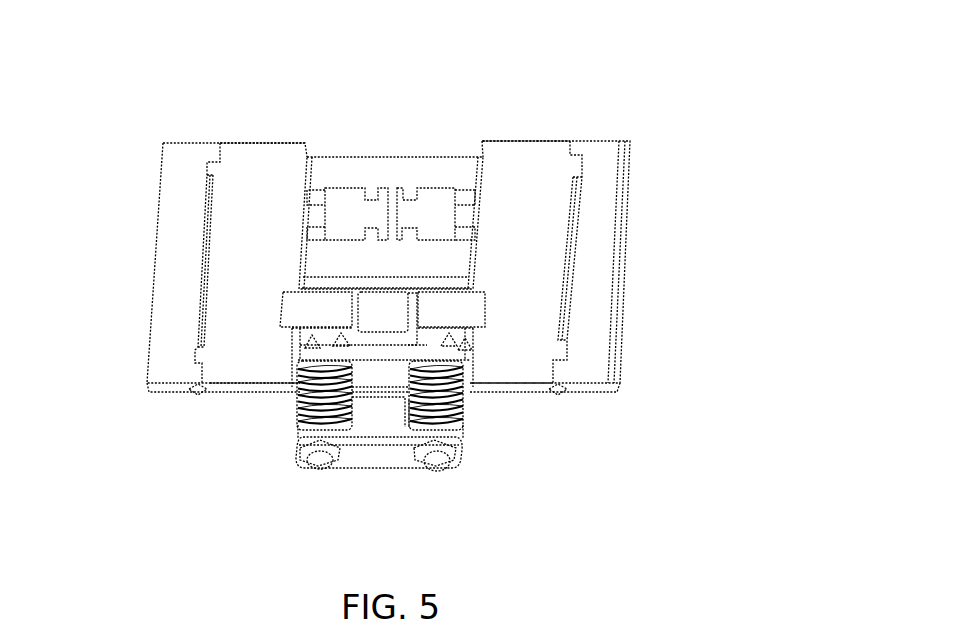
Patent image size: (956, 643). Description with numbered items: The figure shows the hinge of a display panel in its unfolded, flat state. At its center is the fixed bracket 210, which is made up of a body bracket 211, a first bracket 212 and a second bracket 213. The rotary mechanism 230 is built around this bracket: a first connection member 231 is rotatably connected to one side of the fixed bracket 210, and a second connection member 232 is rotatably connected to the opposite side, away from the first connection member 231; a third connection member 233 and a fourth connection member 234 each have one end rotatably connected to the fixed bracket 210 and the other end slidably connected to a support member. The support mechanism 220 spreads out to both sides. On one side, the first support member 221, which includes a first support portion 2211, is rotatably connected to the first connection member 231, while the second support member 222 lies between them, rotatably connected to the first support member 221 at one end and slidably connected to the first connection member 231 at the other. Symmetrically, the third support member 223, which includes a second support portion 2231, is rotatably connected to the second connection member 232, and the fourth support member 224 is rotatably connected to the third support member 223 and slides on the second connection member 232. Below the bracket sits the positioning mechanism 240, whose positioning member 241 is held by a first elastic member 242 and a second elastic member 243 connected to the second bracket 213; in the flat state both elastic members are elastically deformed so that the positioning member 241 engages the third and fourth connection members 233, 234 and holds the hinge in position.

The support mechanism 220 is at (124, 41).
The first support member 221 is at (228, 232).
The first support portion 2211 is at (182, 165).
The second support member 222 is at (258, 168).
The third support member 223 is at (591, 230).
The second support portion 2231 is at (612, 163).
The fourth support member 224 is at (535, 162).
The fixed bracket 210 is at (501, 288).
The body bracket 211 is at (400, 157).
The first bracket 212 is at (447, 285).
The second bracket 213 is at (370, 450).
The rotary mechanism 230 is at (383, 267).
The first connection member 231 is at (340, 207).
The second connection member 232 is at (433, 207).
The third connection member 233 is at (305, 313).
The fourth connection member 234 is at (455, 313).
The positioning mechanism 240 is at (346, 453).
The positioning member 241 is at (307, 360).
The first elastic member 242 is at (302, 424).
The second elastic member 243 is at (460, 433).